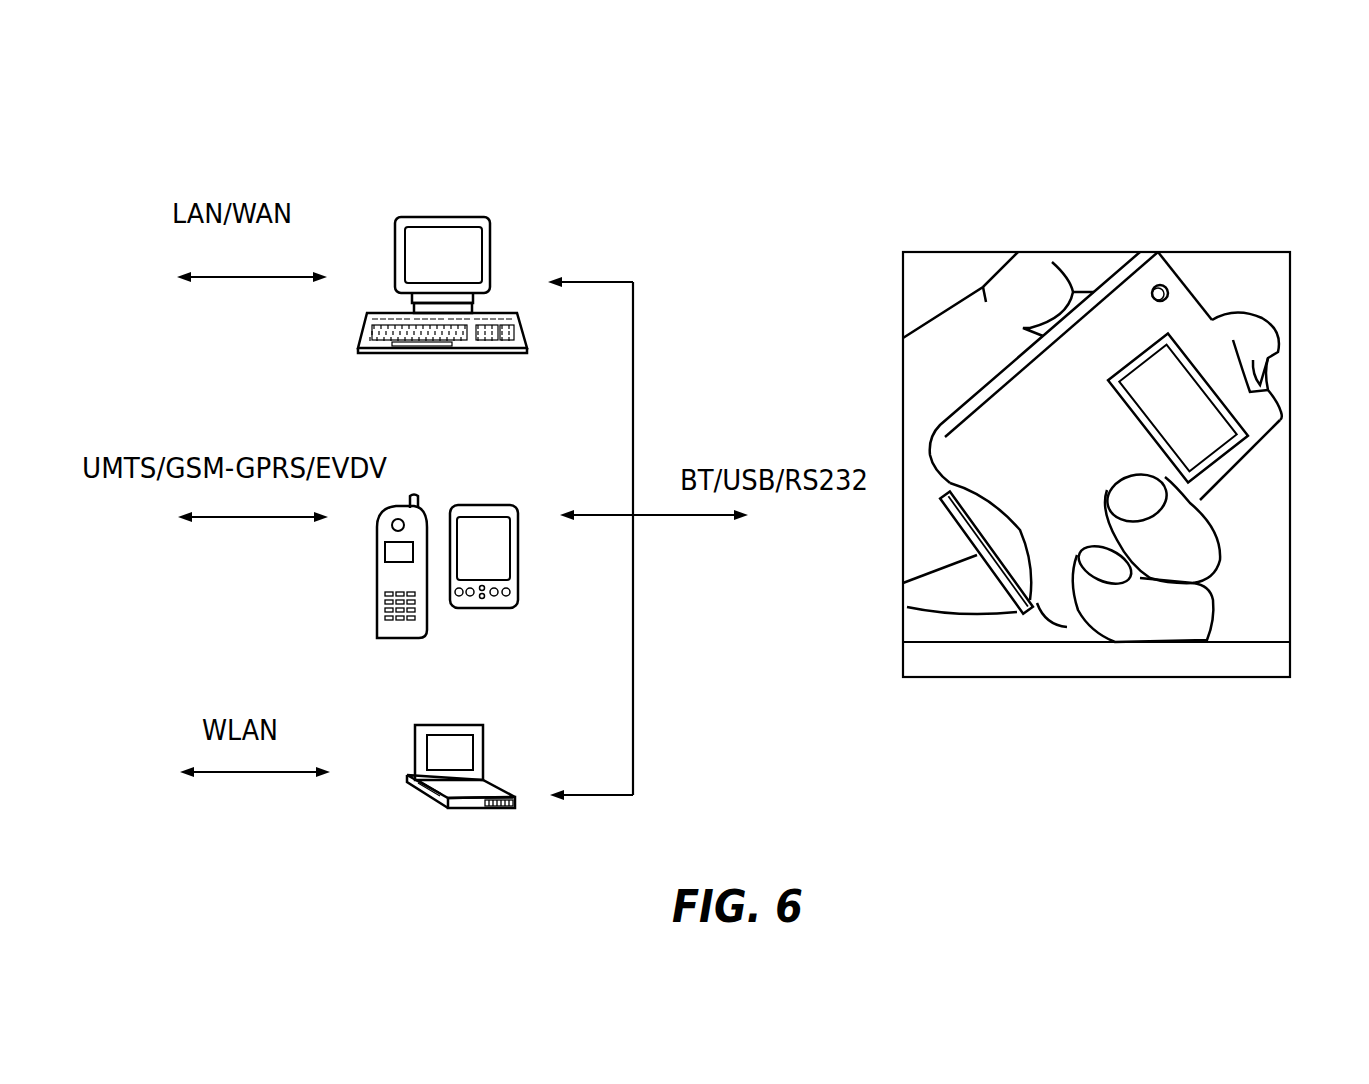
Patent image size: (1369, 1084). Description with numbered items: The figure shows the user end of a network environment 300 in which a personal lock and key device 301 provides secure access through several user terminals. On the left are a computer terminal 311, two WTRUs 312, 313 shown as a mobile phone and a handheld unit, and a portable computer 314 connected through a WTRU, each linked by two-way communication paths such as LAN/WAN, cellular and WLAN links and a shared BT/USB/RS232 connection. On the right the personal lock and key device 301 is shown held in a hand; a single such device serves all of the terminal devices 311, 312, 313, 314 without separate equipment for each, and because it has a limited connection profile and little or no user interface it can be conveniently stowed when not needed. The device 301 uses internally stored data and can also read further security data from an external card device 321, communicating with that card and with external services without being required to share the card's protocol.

The network environment 300 is at (787, 165).
The personal lock and key device 301 is at (1193, 280).
The computer terminal 311 is at (455, 215).
The WTRU 312 is at (377, 587).
The WTRU 313 is at (520, 577).
The portable computer 314 is at (458, 725).
The external card device 321 is at (980, 560).